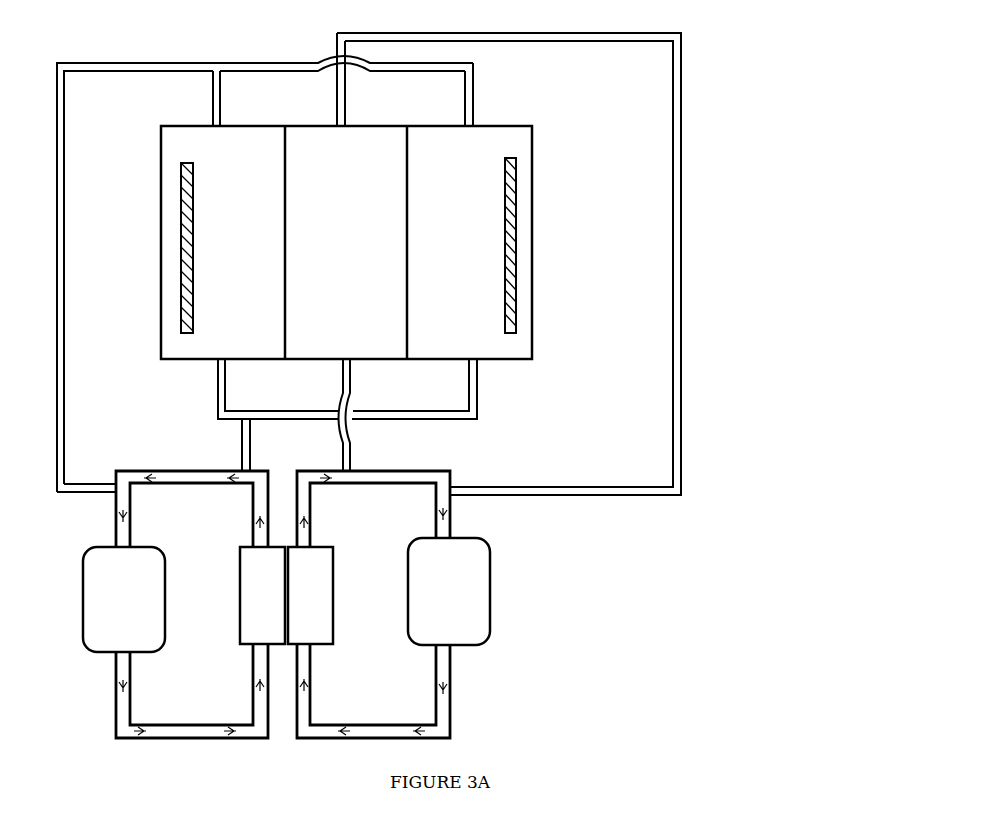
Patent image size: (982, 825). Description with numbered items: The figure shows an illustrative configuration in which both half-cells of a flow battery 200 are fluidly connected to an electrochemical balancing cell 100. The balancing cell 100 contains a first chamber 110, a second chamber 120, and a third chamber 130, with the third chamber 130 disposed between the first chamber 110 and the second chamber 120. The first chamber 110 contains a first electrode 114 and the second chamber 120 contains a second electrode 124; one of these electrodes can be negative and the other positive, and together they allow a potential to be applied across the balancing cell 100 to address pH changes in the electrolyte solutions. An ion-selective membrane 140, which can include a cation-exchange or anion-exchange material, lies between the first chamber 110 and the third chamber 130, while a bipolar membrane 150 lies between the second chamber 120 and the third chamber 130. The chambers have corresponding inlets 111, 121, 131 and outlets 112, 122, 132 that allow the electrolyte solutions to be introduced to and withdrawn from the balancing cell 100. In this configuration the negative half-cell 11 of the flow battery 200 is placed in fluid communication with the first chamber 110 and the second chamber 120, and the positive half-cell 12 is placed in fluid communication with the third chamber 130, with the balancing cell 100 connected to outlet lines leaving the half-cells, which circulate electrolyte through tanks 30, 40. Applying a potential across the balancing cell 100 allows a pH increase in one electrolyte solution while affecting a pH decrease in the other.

The electrochemical balancing cell 100 is at (765, 67).
The first chamber 110 is at (469, 242).
The inlet 111 is at (468, 378).
The outlet 112 is at (474, 108).
The first electrode 114 is at (517, 196).
The second chamber 120 is at (223, 242).
The inlet 121 is at (343, 378).
The outlet 122 is at (346, 108).
The second electrode 124 is at (181, 224).
The third chamber 130 is at (346, 242).
The inlet 131 is at (218, 378).
The outlet 132 is at (221, 107).
The ion-selective membrane 140 is at (410, 160).
The bipolar membrane 150 is at (288, 190).
The flow battery 200 is at (658, 557).
The tank 30 is at (124, 599).
The tank 40 is at (449, 591).
The negative half-cell 11 is at (262, 595).
The positive half-cell 12 is at (310, 595).